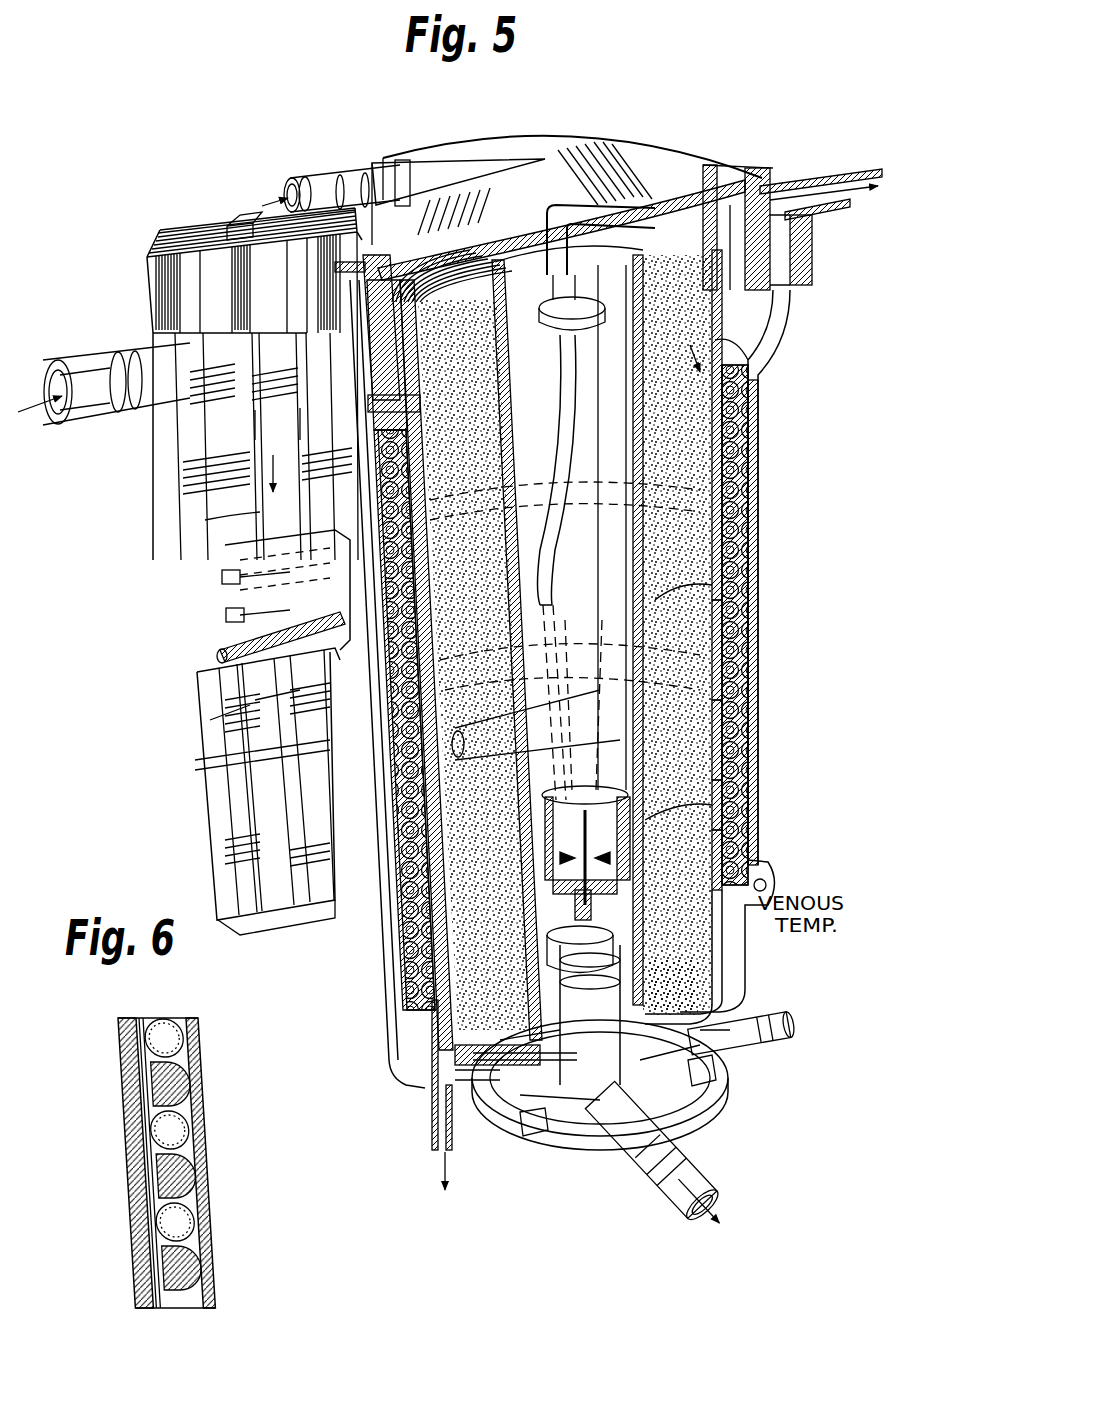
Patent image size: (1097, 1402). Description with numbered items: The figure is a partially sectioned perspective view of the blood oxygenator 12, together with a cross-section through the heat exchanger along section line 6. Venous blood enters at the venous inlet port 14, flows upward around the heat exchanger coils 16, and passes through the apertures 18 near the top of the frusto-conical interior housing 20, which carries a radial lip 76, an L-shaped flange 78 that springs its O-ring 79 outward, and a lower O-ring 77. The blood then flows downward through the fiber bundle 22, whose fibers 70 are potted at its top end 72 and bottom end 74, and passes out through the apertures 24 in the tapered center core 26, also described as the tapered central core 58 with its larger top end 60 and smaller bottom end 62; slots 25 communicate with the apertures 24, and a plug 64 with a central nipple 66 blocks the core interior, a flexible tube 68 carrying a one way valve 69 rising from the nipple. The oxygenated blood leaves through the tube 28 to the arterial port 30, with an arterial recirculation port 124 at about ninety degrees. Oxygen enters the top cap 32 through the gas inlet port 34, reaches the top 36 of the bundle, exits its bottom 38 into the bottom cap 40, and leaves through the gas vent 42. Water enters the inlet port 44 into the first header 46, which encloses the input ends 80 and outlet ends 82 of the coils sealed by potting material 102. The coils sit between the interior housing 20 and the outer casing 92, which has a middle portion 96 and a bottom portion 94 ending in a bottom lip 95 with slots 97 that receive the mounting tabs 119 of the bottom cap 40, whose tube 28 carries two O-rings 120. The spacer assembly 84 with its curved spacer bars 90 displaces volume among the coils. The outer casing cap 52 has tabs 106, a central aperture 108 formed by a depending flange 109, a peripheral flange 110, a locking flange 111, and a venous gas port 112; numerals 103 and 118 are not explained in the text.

In FIG. 5, the section line 6 is at (342, 838).
In FIG. 5, the oxygenator 12 is at (682, 128).
In FIG. 5, the venous inlet port 14 is at (762, 864).
In FIG. 5, the heat exchanger coils 16 is at (742, 500).
In FIG. 6, the heat exchanger coils 16 is at (155, 1020).
In FIG. 5, the apertures 18 is at (155, 448).
In FIG. 5, the interior housing 20 is at (760, 455).
In FIG. 6, the interior housing 20 is at (200, 1088).
In FIG. 5, the fiber bundle 22 is at (724, 690).
In FIG. 5, the apertures 24 is at (767, 885).
In FIG. 5, the slots 25 is at (590, 790).
In FIG. 5, the tapered center core 26 is at (722, 815).
In FIG. 5, the tube 28 is at (472, 1112).
In FIG. 5, the arterial port 30 is at (660, 1182).
In FIG. 5, the top cap 32 is at (560, 156).
In FIG. 5, the gas inlet port 34 is at (393, 180).
In FIG. 5, the top of fiber bundle 36 is at (470, 176).
In FIG. 5, the bottom end of fiber bundle 38 is at (706, 985).
In FIG. 5, the bottom cap 40 is at (702, 1124).
In FIG. 5, the gas vent 42 is at (432, 1142).
In FIG. 5, the inlet port 44 is at (88, 375).
In FIG. 5, the first header 46 is at (198, 690).
In FIG. 5, the outer casing cap 52 is at (140, 283).
In FIG. 5, the tapered central core 58 is at (717, 600).
In FIG. 5, the top end 60 is at (470, 260).
In FIG. 5, the bottom end 62 is at (452, 1060).
In FIG. 5, the plug 64 is at (455, 930).
In FIG. 5, the nipple 66 is at (736, 790).
In FIG. 5, the flexible tube 68 is at (552, 560).
In FIG. 5, the one way valve 69 is at (585, 332).
In FIG. 5, the fibers 70 is at (505, 400).
In FIG. 5, the top end of fiber bundle 72 is at (706, 225).
In FIG. 5, the bottom end of fiber bundle 74 is at (422, 1040).
In FIG. 5, the lip 76 is at (778, 364).
In FIG. 5, the O-ring 77 is at (740, 940).
In FIG. 5, the L-shaped flange 78 is at (772, 318).
In FIG. 5, the O-ring 79 is at (813, 245).
In FIG. 5, the input end 80 is at (232, 583).
In FIG. 5, the outlet end 82 is at (498, 728).
In FIG. 5, the spacer assembly 84 is at (210, 790).
In FIG. 6, the spacer assembly 84 is at (140, 1080).
In FIG. 5, the spacer bars 90 is at (430, 660).
In FIG. 6, the spacer bars 90 is at (183, 1085).
In FIG. 5, the outer casing 92 is at (722, 625).
In FIG. 6, the outer casing 92 is at (130, 1232).
In FIG. 5, the bottom portion 94 is at (405, 1012).
In FIG. 5, the bottom lip 95 is at (722, 1010).
In FIG. 5, the middle portion 96 is at (759, 556).
In FIG. 5, the slots 97 is at (470, 1085).
In FIG. 5, the potting material 102 is at (250, 572).
In FIG. 5, the pin 103 is at (235, 645).
In FIG. 5, the tabs 106 is at (230, 224).
In FIG. 5, the aperture 108 is at (328, 186).
In FIG. 5, the flange 109 is at (420, 358).
In FIG. 5, the flange 110 is at (380, 350).
In FIG. 5, the locking flange 111 is at (292, 192).
In FIG. 5, the venous gas port 112 is at (802, 185).
In FIG. 5, the elbow tube 118 is at (650, 225).
In FIG. 5, the mounting tabs 119 is at (530, 1136).
In FIG. 5, the O-rings 120 is at (562, 1015).
In FIG. 5, the arterial recirculation port 124 is at (775, 1048).